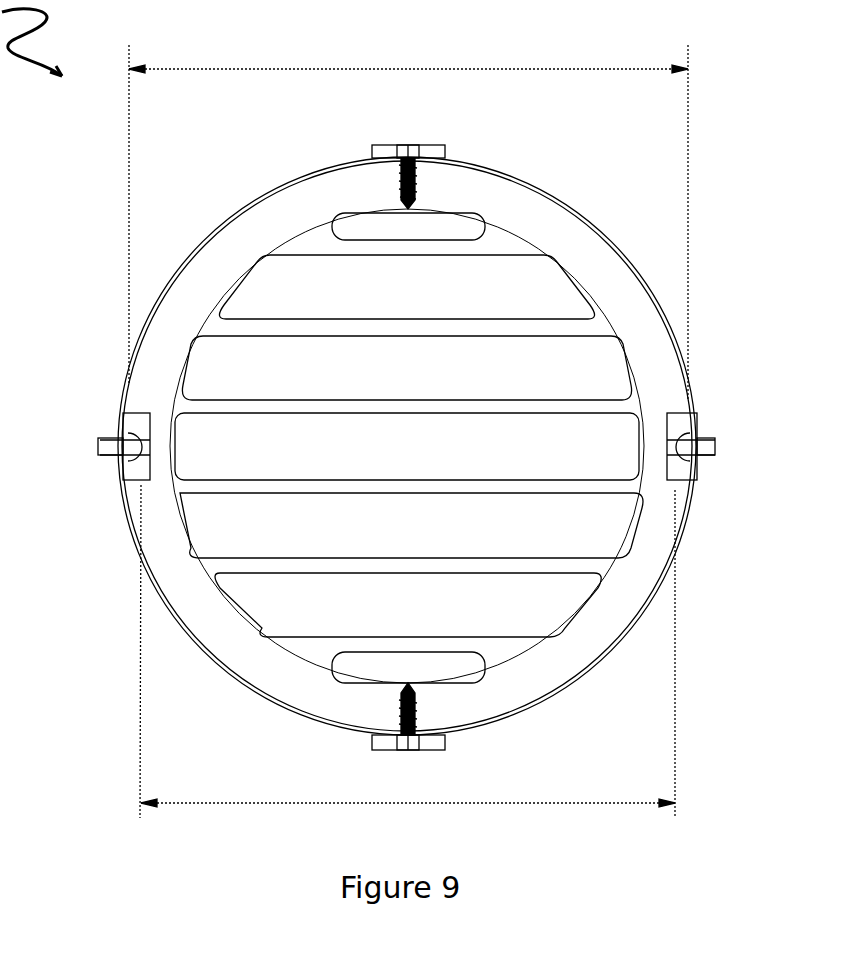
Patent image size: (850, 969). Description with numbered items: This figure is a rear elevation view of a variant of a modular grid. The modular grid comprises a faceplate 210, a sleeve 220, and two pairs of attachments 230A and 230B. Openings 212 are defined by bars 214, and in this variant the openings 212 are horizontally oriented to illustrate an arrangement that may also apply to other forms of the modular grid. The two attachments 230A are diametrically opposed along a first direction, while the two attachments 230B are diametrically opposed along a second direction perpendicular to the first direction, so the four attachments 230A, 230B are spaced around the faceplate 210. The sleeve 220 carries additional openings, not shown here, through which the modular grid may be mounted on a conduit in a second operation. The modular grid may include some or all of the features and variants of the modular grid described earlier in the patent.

The faceplate 210 is at (586, 253).
The openings 212 is at (270, 280).
The bars 214 is at (290, 560).
The sleeve 220 is at (556, 698).
The attachments 230A is at (105, 446).
The attachments 230B is at (410, 148).